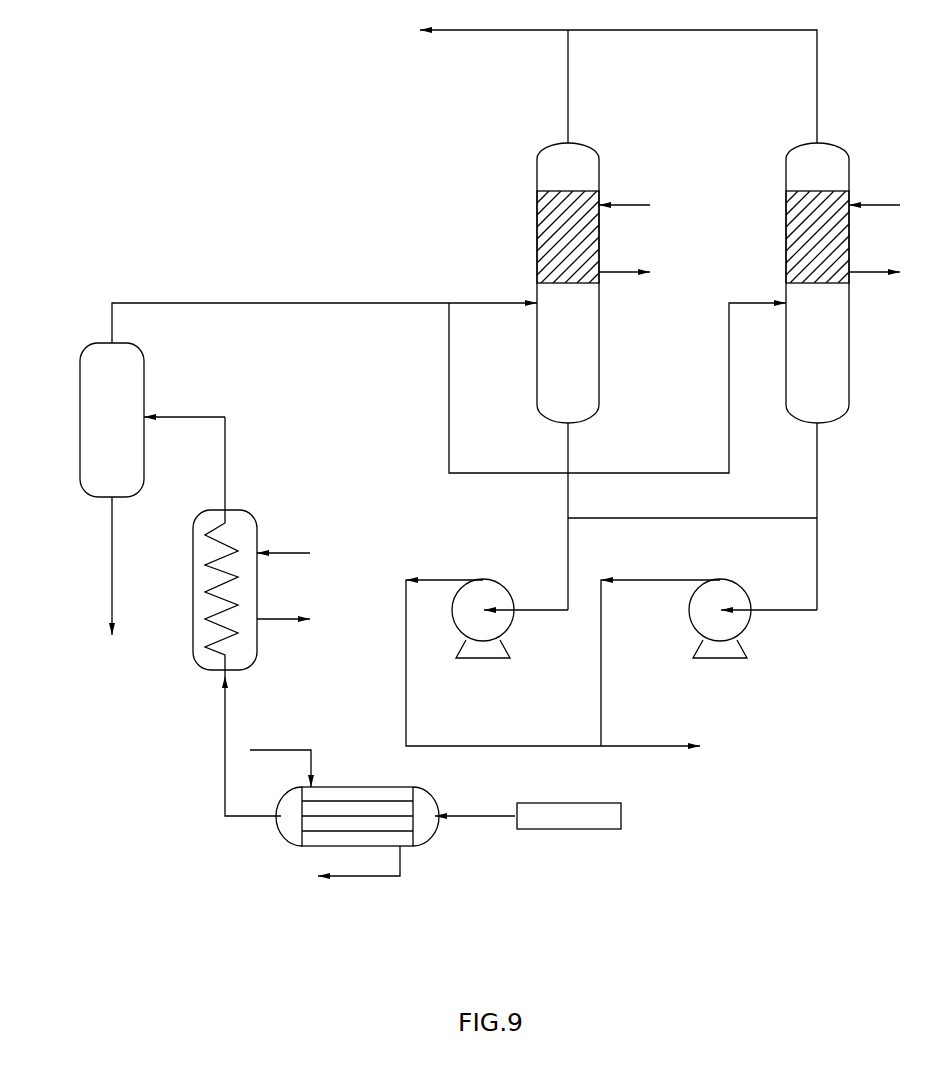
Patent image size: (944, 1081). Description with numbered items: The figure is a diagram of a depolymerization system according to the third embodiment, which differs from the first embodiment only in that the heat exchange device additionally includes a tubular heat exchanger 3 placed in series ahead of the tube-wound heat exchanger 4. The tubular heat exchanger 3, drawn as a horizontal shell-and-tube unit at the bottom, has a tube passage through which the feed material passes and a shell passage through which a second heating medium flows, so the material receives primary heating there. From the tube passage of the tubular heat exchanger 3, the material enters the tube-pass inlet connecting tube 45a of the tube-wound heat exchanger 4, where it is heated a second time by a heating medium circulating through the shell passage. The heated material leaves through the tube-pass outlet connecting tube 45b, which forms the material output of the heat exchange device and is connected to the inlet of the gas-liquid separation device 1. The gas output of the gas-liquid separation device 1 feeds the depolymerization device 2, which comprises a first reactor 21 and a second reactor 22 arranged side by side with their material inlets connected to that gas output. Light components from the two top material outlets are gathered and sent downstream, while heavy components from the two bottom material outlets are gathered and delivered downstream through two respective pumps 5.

The gas-liquid separation device 1 is at (97, 452).
The depolymerization device 2 is at (500, 216).
The first reactor 21 is at (548, 167).
The second reactor 22 is at (803, 165).
The tubular heat exchanger 3 is at (292, 836).
The tube-wound heat exchanger 4 is at (197, 655).
The tube-pass inlet connecting tube 45a is at (228, 672).
The tube-pass outlet connecting tube 45b is at (225, 508).
The pump 5 is at (505, 625).